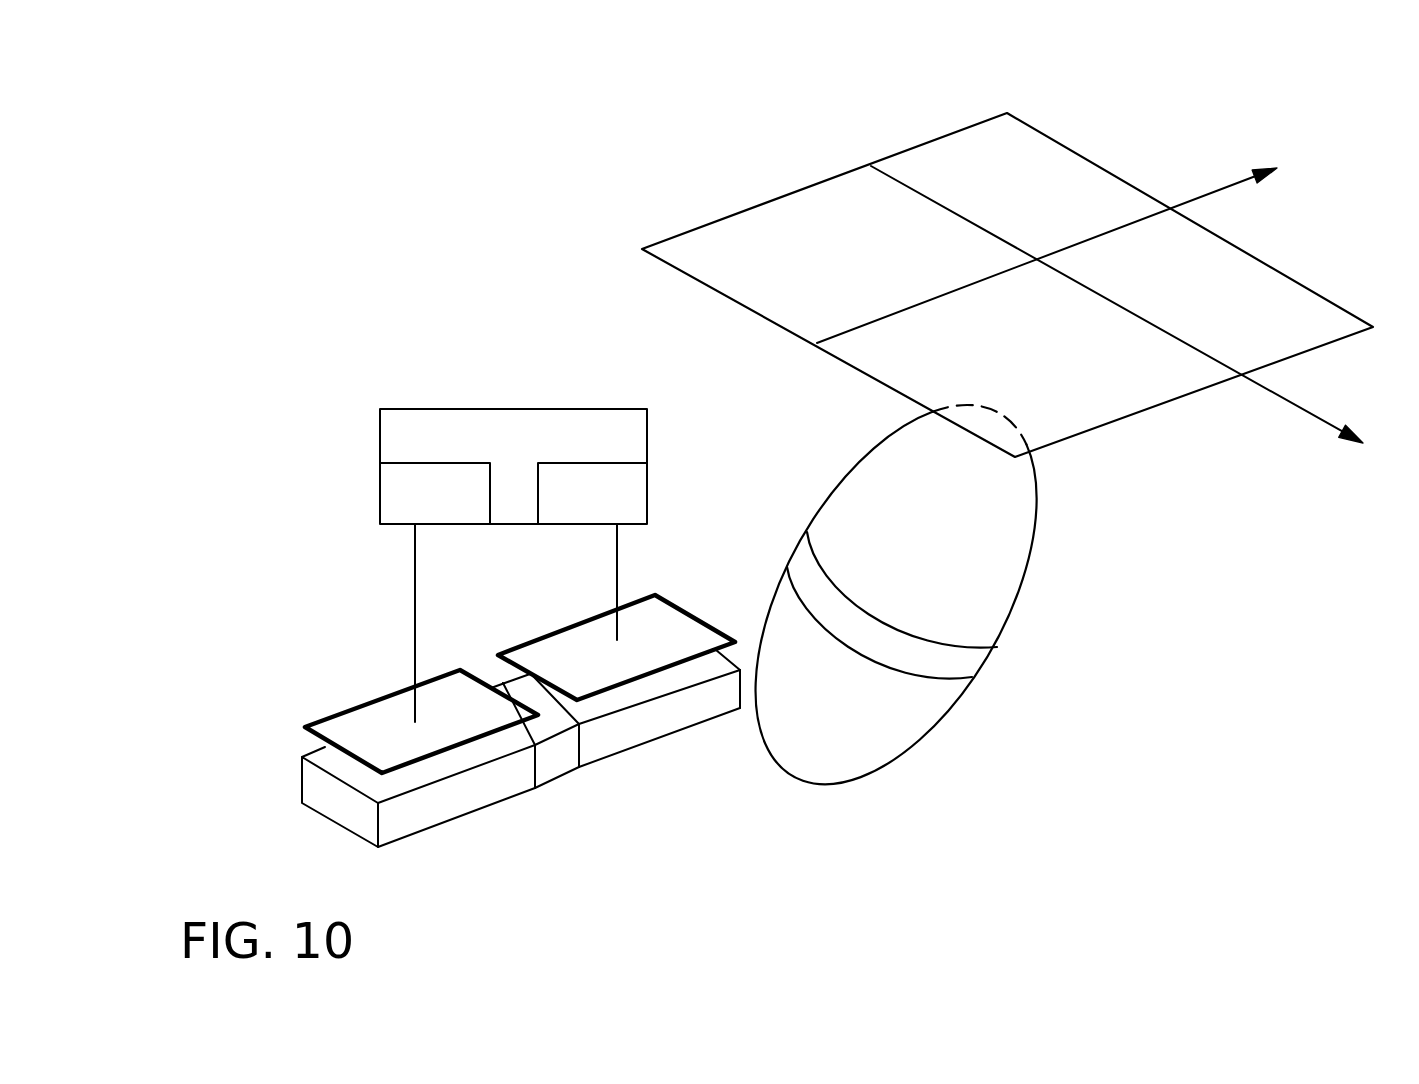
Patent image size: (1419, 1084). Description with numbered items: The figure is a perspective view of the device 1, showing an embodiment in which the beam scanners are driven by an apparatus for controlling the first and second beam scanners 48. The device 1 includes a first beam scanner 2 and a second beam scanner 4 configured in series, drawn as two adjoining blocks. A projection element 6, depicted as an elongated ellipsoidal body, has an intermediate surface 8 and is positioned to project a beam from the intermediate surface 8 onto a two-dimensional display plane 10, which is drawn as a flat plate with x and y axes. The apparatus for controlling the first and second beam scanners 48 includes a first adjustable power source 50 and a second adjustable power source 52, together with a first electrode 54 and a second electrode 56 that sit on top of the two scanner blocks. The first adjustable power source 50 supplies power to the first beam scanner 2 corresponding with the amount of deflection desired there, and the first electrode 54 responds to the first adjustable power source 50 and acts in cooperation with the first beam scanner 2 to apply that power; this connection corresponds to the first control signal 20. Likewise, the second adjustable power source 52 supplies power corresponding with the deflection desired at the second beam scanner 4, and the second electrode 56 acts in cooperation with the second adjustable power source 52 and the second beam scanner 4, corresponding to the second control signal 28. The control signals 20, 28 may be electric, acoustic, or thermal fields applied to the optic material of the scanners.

The device 1 is at (532, 311).
The first beam scanner 2 is at (457, 802).
The second beam scanner 4 is at (672, 722).
The projection element 6 is at (931, 594).
The intermediate surface 8 is at (875, 727).
The two-dimensional display plane 10 is at (1100, 168).
The first control signal 20 is at (415, 597).
The second control signal 28 is at (617, 585).
The apparatus for controlling the first and second beam scanners 48 is at (513, 466).
The first adjustable power source 50 is at (448, 511).
The second adjustable power source 52 is at (610, 511).
The first electrode 54 is at (372, 718).
The second electrode 56 is at (697, 607).